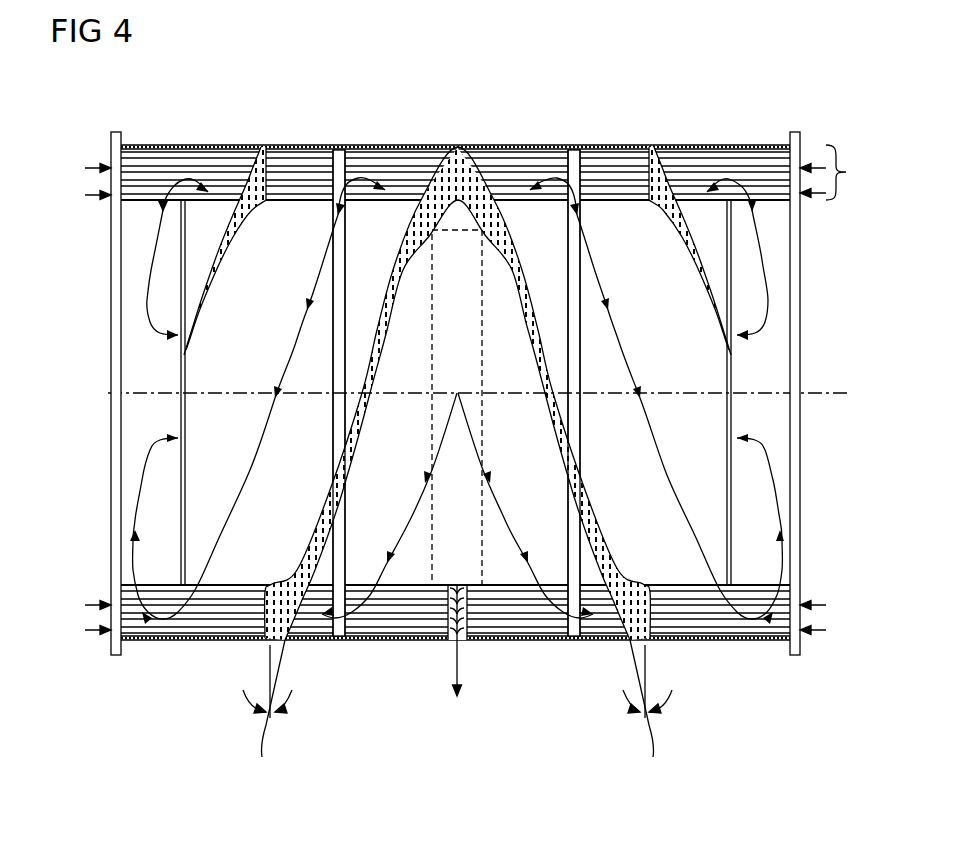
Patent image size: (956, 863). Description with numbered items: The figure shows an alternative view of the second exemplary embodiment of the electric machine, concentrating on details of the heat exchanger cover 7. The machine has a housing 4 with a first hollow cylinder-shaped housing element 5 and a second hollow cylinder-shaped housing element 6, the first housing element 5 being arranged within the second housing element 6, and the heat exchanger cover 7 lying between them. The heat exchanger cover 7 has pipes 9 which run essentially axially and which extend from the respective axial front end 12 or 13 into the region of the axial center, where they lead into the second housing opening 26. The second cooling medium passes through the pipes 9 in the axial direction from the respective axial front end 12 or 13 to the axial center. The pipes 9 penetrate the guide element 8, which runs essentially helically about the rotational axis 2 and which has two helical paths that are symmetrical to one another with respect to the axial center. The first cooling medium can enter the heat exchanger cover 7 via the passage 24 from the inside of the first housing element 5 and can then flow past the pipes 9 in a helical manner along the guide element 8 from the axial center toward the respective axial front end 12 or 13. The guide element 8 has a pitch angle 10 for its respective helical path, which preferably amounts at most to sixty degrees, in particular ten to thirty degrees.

The rotational axis 2 is at (848, 400).
The housing 4 is at (110, 218).
The first housing element 5 is at (520, 198).
The second housing element 6 is at (548, 147).
The heat exchanger cover 7 is at (832, 390).
The guide element 8 is at (262, 147).
The pipes 9 is at (310, 178).
The pitch angle 10 is at (457, 715).
The axial front end 12 is at (818, 308).
The axial front end 13 is at (100, 308).
The passage 24 is at (483, 568).
The second housing opening 26 is at (452, 640).